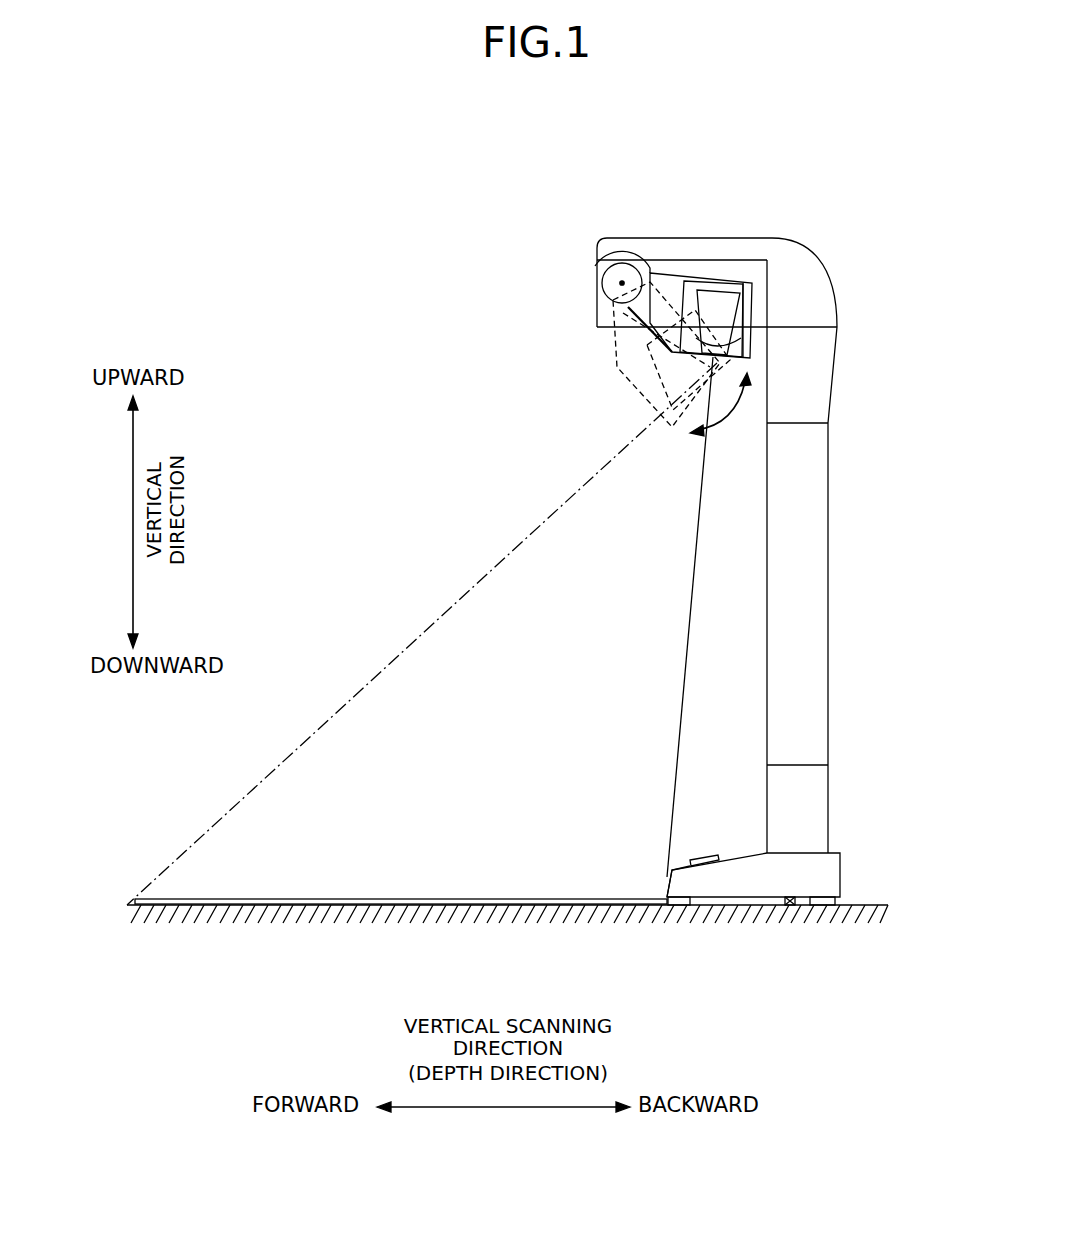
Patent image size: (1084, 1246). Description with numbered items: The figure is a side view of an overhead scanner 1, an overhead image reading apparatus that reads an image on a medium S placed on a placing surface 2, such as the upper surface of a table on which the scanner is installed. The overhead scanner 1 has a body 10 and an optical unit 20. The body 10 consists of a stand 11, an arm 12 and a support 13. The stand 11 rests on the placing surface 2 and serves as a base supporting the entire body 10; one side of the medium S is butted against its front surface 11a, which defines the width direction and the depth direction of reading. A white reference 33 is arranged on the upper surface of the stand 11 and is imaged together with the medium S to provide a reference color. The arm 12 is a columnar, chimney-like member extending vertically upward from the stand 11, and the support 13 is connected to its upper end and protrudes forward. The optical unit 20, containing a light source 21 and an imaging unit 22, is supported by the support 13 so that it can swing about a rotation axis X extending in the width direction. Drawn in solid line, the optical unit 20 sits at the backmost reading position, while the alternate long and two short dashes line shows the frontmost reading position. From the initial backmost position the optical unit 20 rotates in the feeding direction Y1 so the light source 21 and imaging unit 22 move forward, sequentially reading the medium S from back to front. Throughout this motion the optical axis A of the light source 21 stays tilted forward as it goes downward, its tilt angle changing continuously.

The overhead scanner 1 is at (618, 163).
The placing surface 2 is at (880, 904).
The body 10 is at (854, 529).
The stand 11 is at (828, 864).
The front surface 11a is at (667, 884).
The arm 12 is at (825, 640).
The support 13 is at (803, 282).
The optical unit 20 is at (670, 265).
The light source 21 is at (672, 352).
The imaging unit 22 is at (747, 347).
The white reference 33 is at (702, 855).
The rotation axis X is at (618, 283).
The feeding direction Y1 is at (720, 414).
The optical axis A is at (382, 652).
The medium S is at (337, 899).